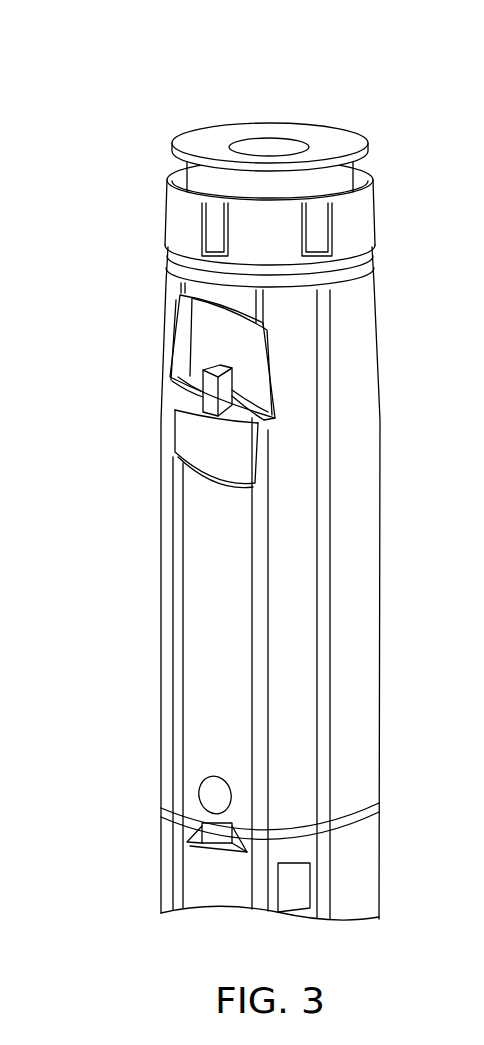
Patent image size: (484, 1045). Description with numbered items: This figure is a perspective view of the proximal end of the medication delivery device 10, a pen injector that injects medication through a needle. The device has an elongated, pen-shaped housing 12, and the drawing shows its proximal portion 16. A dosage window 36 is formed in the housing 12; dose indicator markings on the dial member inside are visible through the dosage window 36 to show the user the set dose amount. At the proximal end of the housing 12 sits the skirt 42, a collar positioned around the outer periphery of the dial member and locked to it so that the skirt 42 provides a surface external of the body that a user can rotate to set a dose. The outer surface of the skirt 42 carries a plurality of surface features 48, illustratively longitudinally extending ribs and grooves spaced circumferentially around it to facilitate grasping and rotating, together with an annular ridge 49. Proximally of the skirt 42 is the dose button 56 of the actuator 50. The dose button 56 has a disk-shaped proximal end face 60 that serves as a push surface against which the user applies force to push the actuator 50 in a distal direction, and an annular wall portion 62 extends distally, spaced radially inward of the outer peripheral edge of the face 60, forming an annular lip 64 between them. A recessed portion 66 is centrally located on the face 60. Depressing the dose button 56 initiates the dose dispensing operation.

The medication delivery device 10 is at (235, 462).
The housing 12 is at (146, 634).
The proximal portion 16 is at (197, 583).
The dosage window 36 is at (194, 358).
The skirt 42 is at (294, 245).
The surface features 48 is at (204, 231).
The annular ridge 49 is at (390, 262).
The actuator 50 is at (275, 167).
The dose button 56 is at (330, 114).
The proximal end face 60 is at (233, 104).
The annular wall portion 62 is at (357, 172).
The annular lip 64 is at (172, 148).
The recessed portion 66 is at (268, 150).